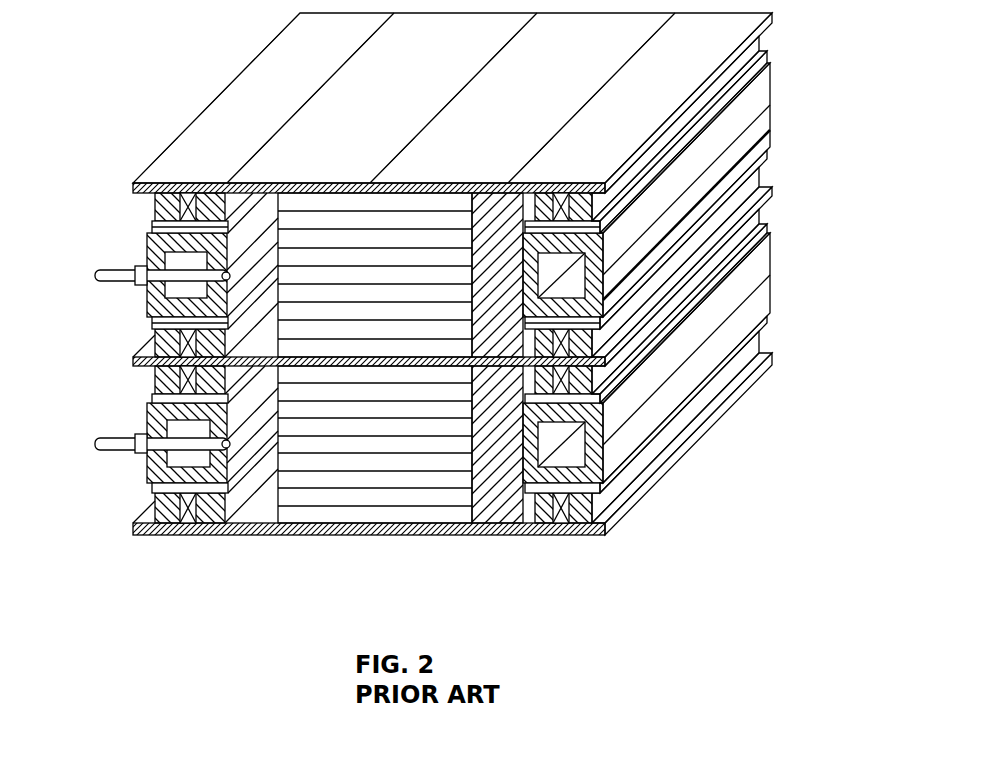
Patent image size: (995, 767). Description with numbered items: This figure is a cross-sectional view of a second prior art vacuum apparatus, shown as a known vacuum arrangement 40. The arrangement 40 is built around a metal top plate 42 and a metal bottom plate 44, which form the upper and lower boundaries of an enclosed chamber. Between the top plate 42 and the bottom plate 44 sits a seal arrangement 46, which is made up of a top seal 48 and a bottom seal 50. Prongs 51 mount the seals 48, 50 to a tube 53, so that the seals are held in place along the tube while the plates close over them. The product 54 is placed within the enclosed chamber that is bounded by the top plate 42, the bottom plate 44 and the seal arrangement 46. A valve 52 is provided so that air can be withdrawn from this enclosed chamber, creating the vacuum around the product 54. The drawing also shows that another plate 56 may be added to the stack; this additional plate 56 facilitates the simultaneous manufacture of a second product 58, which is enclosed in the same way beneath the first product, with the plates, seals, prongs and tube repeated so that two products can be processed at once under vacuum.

The vacuum arrangement 40 is at (153, 109).
The metal top plate 42 is at (272, 48).
The metal bottom plate 44 is at (150, 366).
The seal arrangement 46 is at (150, 244).
The top seal 48 is at (157, 206).
The bottom seal 50 is at (157, 340).
The prongs 51 is at (525, 222).
The valve 52 is at (122, 270).
The tube 53 is at (632, 273).
The product 54 is at (268, 272).
The plate 56 is at (178, 538).
The second product 58 is at (268, 478).